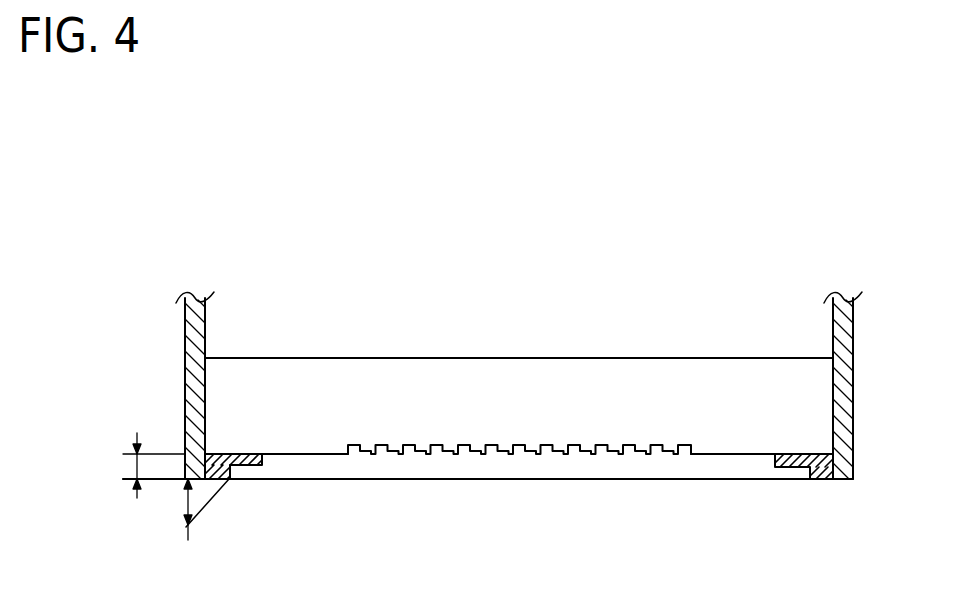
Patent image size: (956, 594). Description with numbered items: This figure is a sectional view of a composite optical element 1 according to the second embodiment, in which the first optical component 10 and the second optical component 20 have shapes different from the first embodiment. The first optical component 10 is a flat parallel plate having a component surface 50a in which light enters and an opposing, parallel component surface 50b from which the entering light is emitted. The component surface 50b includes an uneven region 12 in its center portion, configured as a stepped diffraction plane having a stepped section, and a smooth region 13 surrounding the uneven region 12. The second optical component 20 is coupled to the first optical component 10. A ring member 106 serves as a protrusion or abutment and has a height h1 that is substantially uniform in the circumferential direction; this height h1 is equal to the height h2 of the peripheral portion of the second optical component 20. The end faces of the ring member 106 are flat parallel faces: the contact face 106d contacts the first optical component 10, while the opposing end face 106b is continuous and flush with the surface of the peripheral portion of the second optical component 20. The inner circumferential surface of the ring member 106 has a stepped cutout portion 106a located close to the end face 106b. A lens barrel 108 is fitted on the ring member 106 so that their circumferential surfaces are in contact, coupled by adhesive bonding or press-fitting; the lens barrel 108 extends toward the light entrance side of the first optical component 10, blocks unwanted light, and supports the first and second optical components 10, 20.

The composite optical element 1 is at (355, 228).
The first optical component 10 is at (623, 356).
The component surface 50a is at (468, 357).
The lens barrel 108 is at (194, 392).
The ring member 106 is at (207, 453).
The cutout portion 106a is at (232, 470).
The contact face 106d is at (807, 453).
The end face 106b is at (818, 481).
The second optical component 20 is at (488, 510).
The component surface 50b is at (322, 456).
The uneven region 12 is at (467, 447).
The smooth region 13 is at (717, 456).
The height h1 is at (135, 465).
The height h2 is at (186, 509).